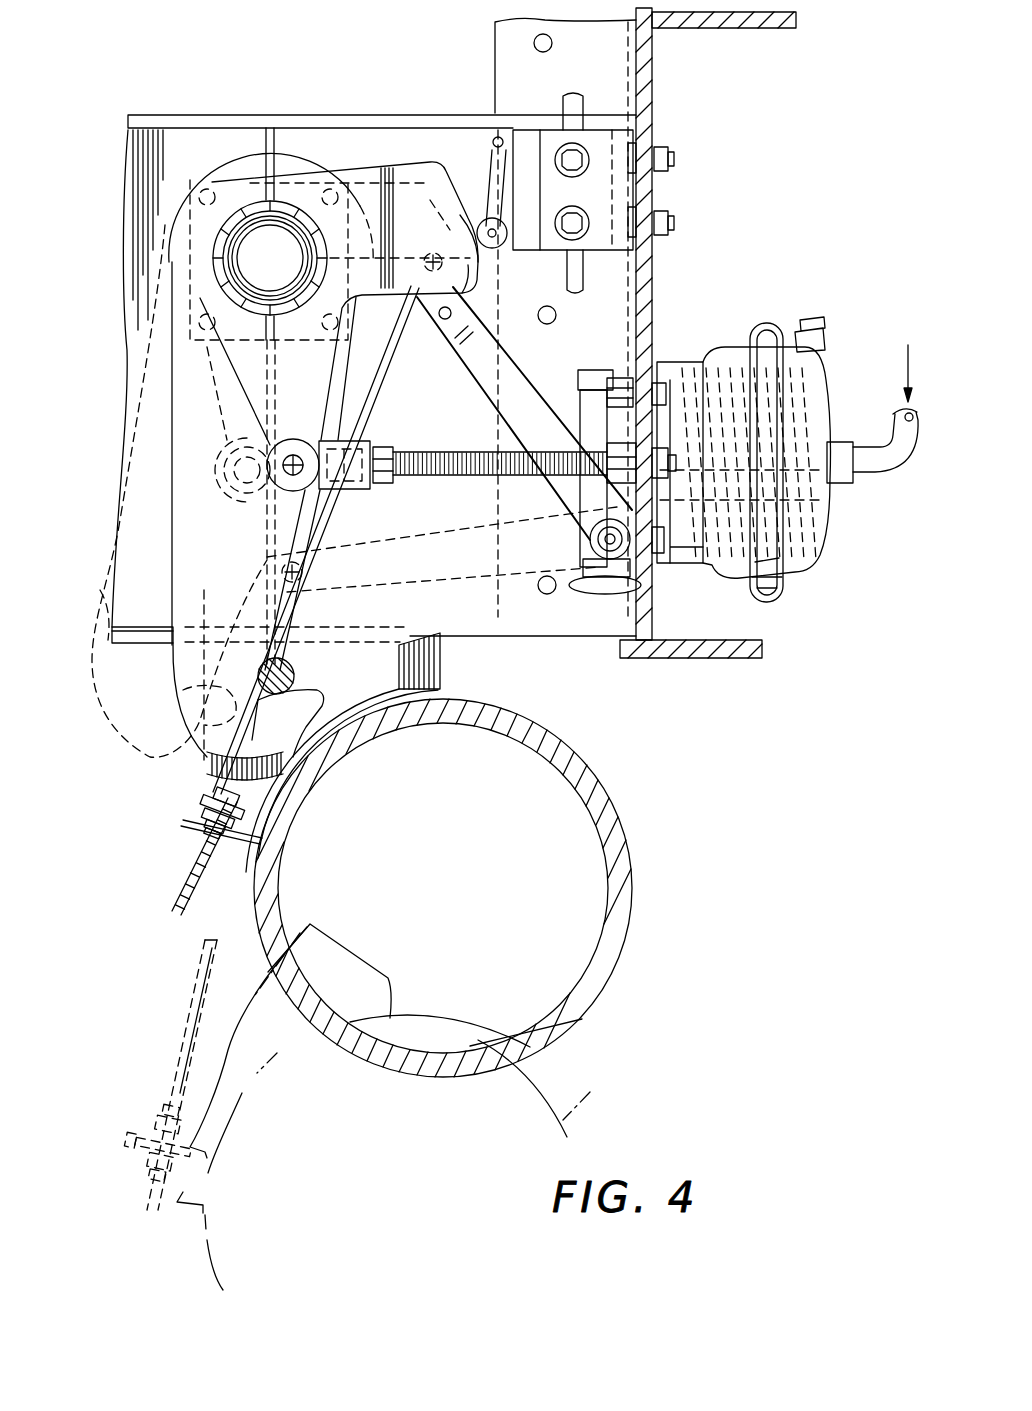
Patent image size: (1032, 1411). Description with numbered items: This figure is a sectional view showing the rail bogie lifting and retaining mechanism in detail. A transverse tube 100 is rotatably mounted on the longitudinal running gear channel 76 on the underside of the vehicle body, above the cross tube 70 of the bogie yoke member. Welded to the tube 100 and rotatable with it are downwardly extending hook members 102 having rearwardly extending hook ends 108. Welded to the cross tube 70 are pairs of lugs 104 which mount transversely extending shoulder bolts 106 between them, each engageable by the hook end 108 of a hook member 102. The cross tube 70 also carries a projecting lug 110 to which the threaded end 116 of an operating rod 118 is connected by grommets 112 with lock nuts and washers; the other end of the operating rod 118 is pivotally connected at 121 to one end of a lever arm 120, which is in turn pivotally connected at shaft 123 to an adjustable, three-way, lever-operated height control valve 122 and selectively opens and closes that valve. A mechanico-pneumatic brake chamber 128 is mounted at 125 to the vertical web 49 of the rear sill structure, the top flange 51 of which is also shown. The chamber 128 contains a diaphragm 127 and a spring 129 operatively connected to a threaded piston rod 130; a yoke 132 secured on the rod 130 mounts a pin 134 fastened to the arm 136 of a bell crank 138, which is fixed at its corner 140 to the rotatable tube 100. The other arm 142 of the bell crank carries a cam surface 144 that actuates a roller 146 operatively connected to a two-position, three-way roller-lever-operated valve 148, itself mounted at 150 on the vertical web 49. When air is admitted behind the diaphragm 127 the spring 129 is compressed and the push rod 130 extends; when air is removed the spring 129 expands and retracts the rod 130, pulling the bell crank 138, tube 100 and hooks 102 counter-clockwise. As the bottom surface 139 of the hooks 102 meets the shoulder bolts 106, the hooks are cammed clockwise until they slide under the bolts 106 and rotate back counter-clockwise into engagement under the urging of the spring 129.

The vertical web 49 is at (650, 258).
The top flange 51 is at (732, 28).
The cross tube 70 is at (518, 712).
The longitudinal running gear channel 76 is at (253, 113).
The transverse tube 100 is at (300, 215).
The hook member 102 is at (124, 455).
The lug 104 is at (206, 772).
The shoulder bolt 106 is at (291, 672).
The hook end 108 is at (302, 706).
The projecting lug 110 is at (206, 816).
The grommet 112 is at (200, 834).
The threaded end 116 is at (188, 883).
The operating rod 118 is at (290, 609).
The lever arm 120 is at (470, 368).
The pivotal connection 121 is at (444, 258).
The height control valve 122 is at (576, 395).
The shaft 123 is at (596, 541).
The mounting 125 is at (622, 380).
The diaphragm 127 is at (805, 566).
The brake chamber 128 is at (815, 505).
The spring 129 is at (744, 345).
The threaded piston rod 130 is at (420, 468).
The yoke 132 is at (352, 484).
The pin 134 is at (225, 461).
The arm 136 is at (248, 375).
The bell crank 138 is at (355, 163).
The bottom surface 139 is at (304, 732).
The corner 140 is at (248, 198).
The other arm 142 is at (381, 178).
The cam surface 144 is at (478, 275).
The roller 146 is at (494, 190).
The roller-lever-operated valve 148 is at (612, 132).
The mounting 150 is at (658, 150).